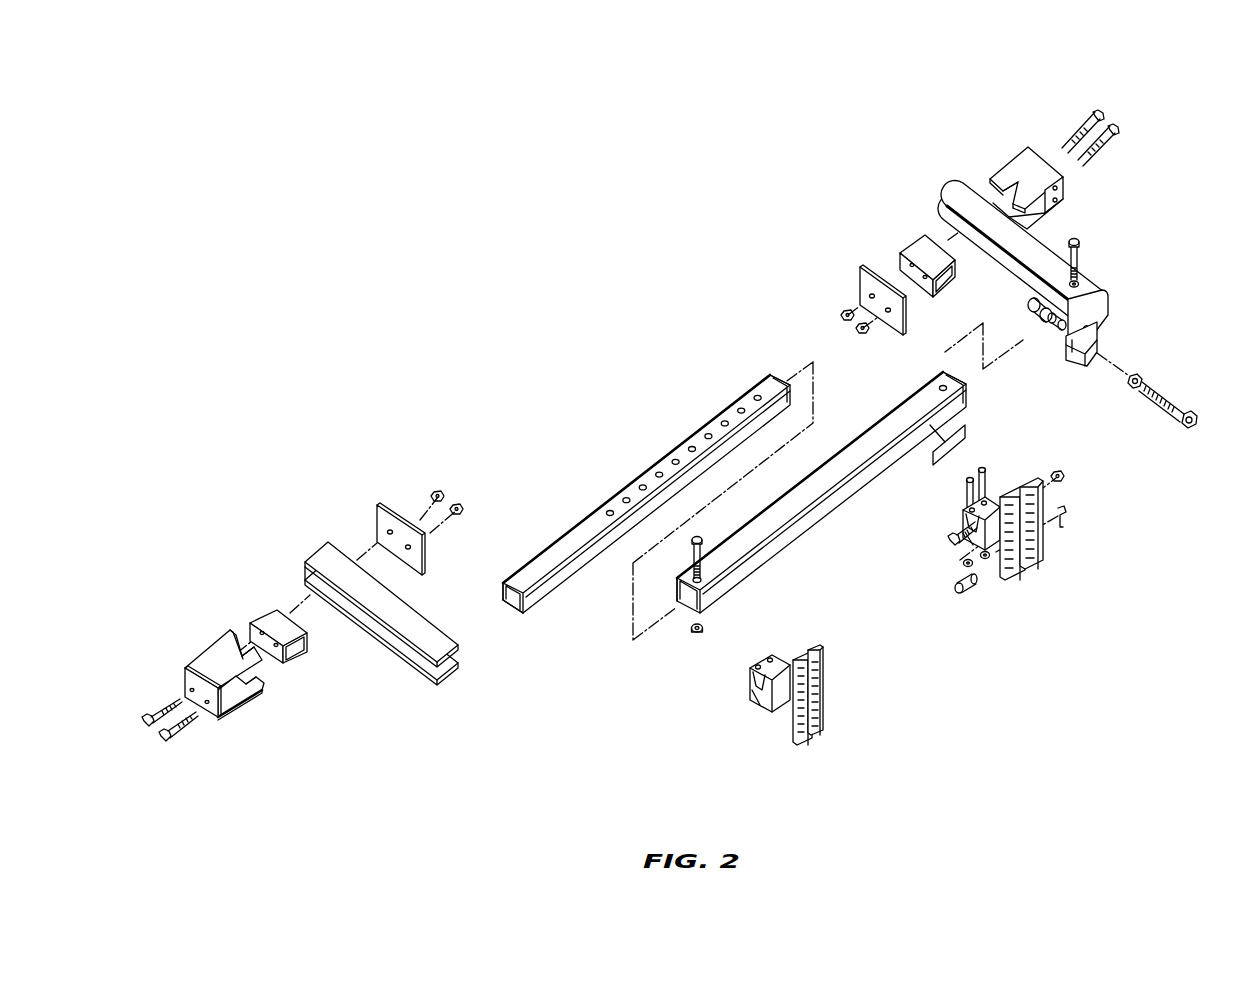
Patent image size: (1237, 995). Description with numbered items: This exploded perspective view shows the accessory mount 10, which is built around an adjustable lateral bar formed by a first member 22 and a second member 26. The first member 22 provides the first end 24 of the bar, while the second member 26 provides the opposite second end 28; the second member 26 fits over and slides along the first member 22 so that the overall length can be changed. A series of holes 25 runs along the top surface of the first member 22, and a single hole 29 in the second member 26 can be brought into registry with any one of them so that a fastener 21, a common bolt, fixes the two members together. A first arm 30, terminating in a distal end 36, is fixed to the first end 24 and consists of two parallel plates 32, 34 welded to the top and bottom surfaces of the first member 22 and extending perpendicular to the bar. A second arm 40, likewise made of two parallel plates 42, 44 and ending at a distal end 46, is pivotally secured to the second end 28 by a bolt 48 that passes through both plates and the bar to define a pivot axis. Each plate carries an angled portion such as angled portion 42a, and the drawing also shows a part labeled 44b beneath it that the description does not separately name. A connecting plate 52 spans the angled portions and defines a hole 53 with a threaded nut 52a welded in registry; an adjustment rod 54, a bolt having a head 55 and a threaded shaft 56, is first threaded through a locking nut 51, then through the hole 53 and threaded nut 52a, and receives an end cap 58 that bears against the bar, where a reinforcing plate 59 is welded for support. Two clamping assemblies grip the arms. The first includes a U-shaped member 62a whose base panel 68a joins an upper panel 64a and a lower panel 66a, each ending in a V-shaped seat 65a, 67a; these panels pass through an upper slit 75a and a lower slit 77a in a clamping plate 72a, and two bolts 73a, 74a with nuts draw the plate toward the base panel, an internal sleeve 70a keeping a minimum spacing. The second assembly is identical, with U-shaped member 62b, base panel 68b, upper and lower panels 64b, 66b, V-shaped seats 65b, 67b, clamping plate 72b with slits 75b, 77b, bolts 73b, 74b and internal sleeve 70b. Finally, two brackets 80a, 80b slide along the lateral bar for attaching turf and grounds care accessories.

The accessory mount 10 is at (390, 284).
The fastener 21 is at (707, 540).
The first member 22 is at (585, 522).
The first end 24 is at (528, 606).
The series of holes 25 is at (708, 436).
The second member 26 is at (828, 520).
The second end 28 is at (925, 391).
The hole 29 is at (706, 581).
The first arm 30 is at (466, 634).
The parallel plate 32 is at (438, 623).
The parallel plate 34 is at (420, 678).
The distal end 36 is at (306, 575).
The second arm 40 is at (940, 229).
The parallel plate 42 is at (1082, 242).
The angled portion 42a is at (1112, 300).
The parallel plate 44 is at (1003, 273).
The bracket 44b is at (1127, 362).
The distal end 46 is at (958, 185).
The bolt 48 is at (1082, 285).
The locking nut 51 is at (1128, 385).
The connecting plate 52 is at (1062, 325).
The threaded nut 52a is at (1045, 318).
The hole 53 is at (1095, 365).
The adjustment rod 54 is at (1165, 410).
The head 55 is at (1192, 420).
The threaded shaft 56 is at (1165, 400).
The end cap 58 is at (1030, 305).
The reinforcing plate 59 is at (972, 437).
The U-shaped member 62a is at (190, 666).
The U-shaped member 62b is at (1040, 147).
The upper panel 64a is at (215, 652).
The upper panel 64b is at (1022, 160).
The V-shaped seat 65a is at (238, 633).
The V-shaped seat 65b is at (1005, 182).
The lower panel 66a is at (240, 706).
The lower panel 66b is at (1060, 208).
The V-shaped seat 67a is at (262, 688).
The V-shaped seat 67b is at (995, 200).
The base panel 68a is at (185, 683).
The base panel 68b is at (1066, 185).
The internal sleeve 70a is at (265, 612).
The internal sleeve 70b is at (910, 237).
The clamping plate 72a is at (377, 518).
The clamping plate 72b is at (858, 288).
The bolt 73a is at (145, 718).
The bolt 73b is at (1100, 114).
The bolt 74a is at (165, 742).
The bolt 74b is at (1120, 135).
The upper slit 75a is at (427, 550).
The upper slit 75b is at (900, 313).
The lower slit 77a is at (422, 578).
The lower slit 77b is at (890, 335).
The bracket 80a is at (790, 752).
The bracket 80b is at (1017, 608).